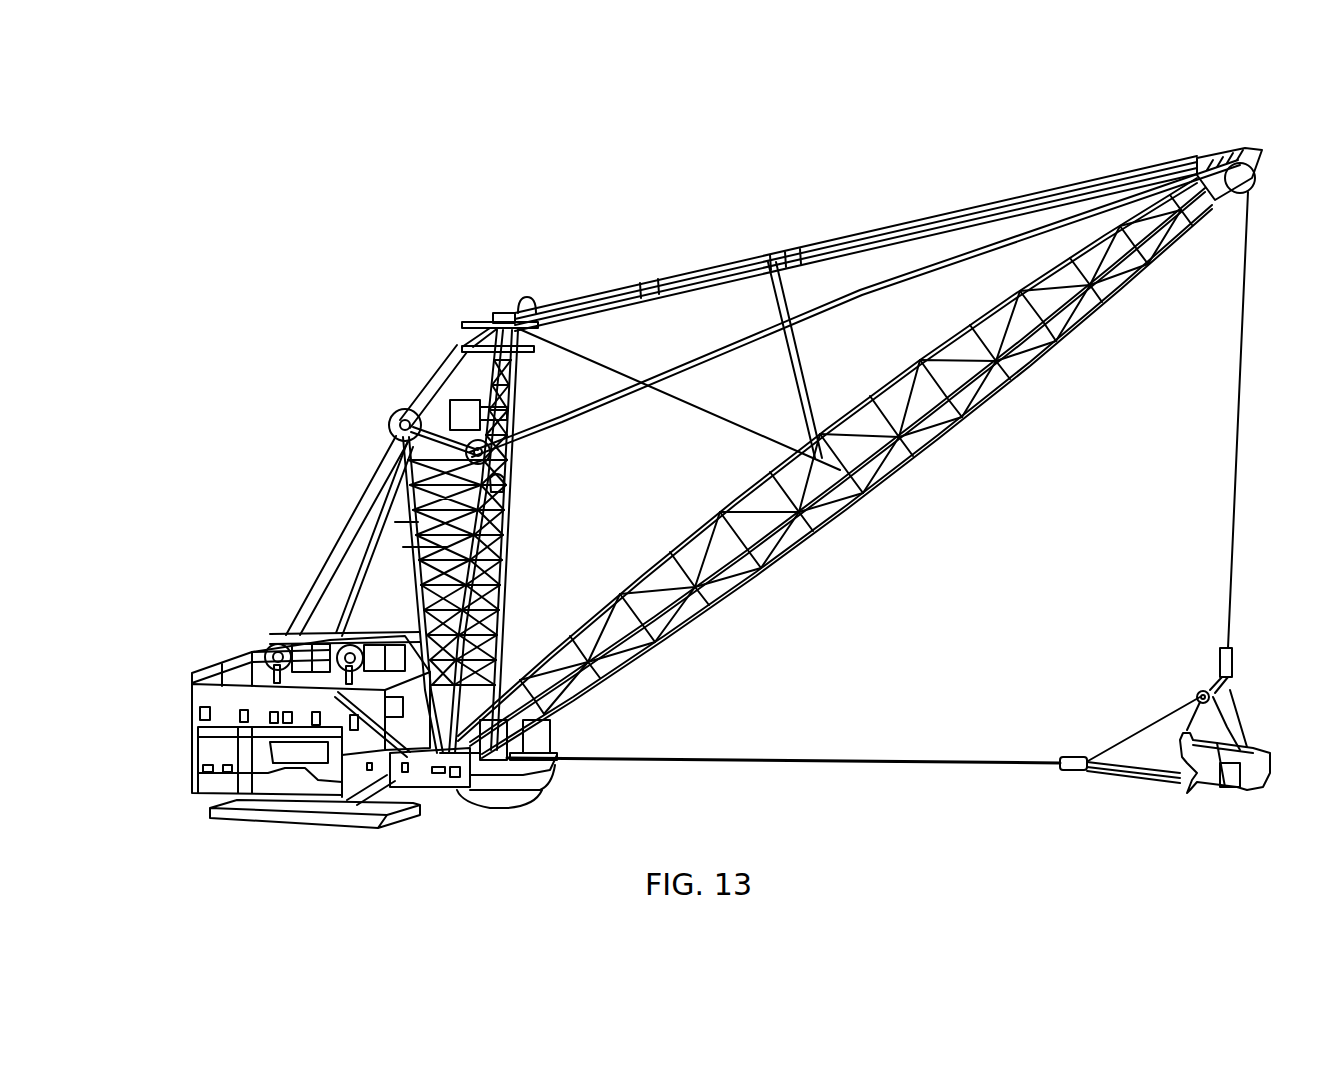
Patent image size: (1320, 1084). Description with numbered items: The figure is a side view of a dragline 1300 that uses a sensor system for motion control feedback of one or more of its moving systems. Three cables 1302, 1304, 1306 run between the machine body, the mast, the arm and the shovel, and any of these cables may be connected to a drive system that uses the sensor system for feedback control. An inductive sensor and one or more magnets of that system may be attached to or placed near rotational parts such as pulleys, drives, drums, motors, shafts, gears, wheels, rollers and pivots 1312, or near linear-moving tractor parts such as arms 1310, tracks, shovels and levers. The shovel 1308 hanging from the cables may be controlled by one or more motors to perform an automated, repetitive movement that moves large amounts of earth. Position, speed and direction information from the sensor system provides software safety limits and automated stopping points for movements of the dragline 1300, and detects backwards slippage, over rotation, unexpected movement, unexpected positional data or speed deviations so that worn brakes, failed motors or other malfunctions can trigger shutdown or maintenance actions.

The dragline 1300 is at (270, 168).
The cable 1302 is at (1243, 363).
The cable 1304 is at (898, 758).
The cable 1306 is at (660, 405).
The shovel 1308 is at (1213, 780).
The arm 1310 is at (977, 415).
The pivot 1312 is at (475, 797).